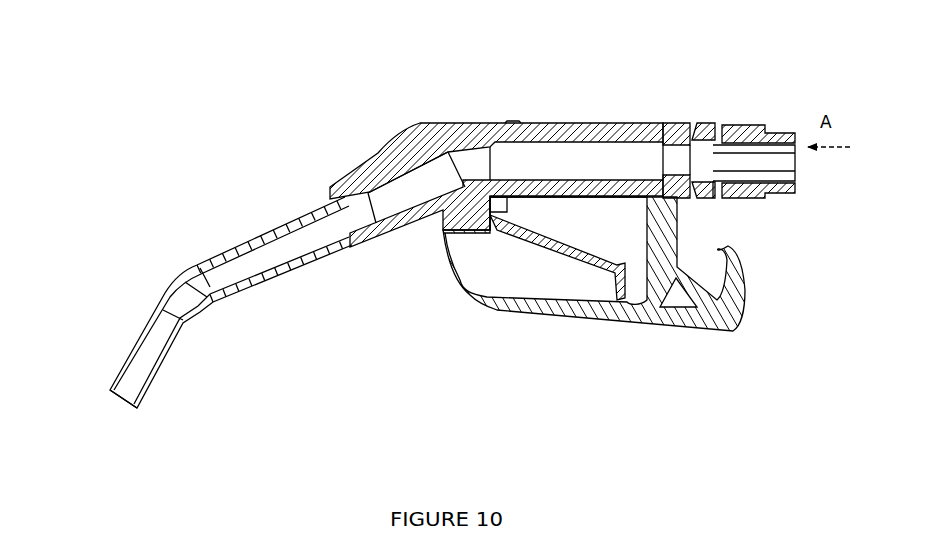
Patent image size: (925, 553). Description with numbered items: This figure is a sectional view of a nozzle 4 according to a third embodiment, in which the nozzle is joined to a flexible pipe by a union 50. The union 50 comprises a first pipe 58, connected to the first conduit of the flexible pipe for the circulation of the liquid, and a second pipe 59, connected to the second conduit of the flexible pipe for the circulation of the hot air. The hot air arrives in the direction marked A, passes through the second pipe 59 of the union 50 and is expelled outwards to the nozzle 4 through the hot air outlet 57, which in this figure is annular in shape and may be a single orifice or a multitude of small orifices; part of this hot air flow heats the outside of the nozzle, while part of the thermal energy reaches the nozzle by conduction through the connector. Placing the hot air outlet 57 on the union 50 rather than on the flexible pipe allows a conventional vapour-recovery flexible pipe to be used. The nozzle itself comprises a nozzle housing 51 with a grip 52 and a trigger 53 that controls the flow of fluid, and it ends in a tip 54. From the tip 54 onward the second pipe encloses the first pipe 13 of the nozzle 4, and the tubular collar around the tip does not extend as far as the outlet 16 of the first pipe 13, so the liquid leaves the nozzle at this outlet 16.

The nozzle 4 is at (473, 127).
The first pipe of nozzle 13 is at (413, 190).
The outlet of the first pipe 16 is at (110, 400).
The union 50 is at (773, 187).
The nozzle housing 51 is at (598, 346).
The grip 52 is at (622, 128).
The trigger 53 is at (537, 234).
The tip 54 is at (247, 240).
The hot air outlet 57 is at (713, 116).
The first pipe of union 58 is at (787, 160).
The second pipe of union 59 is at (765, 126).